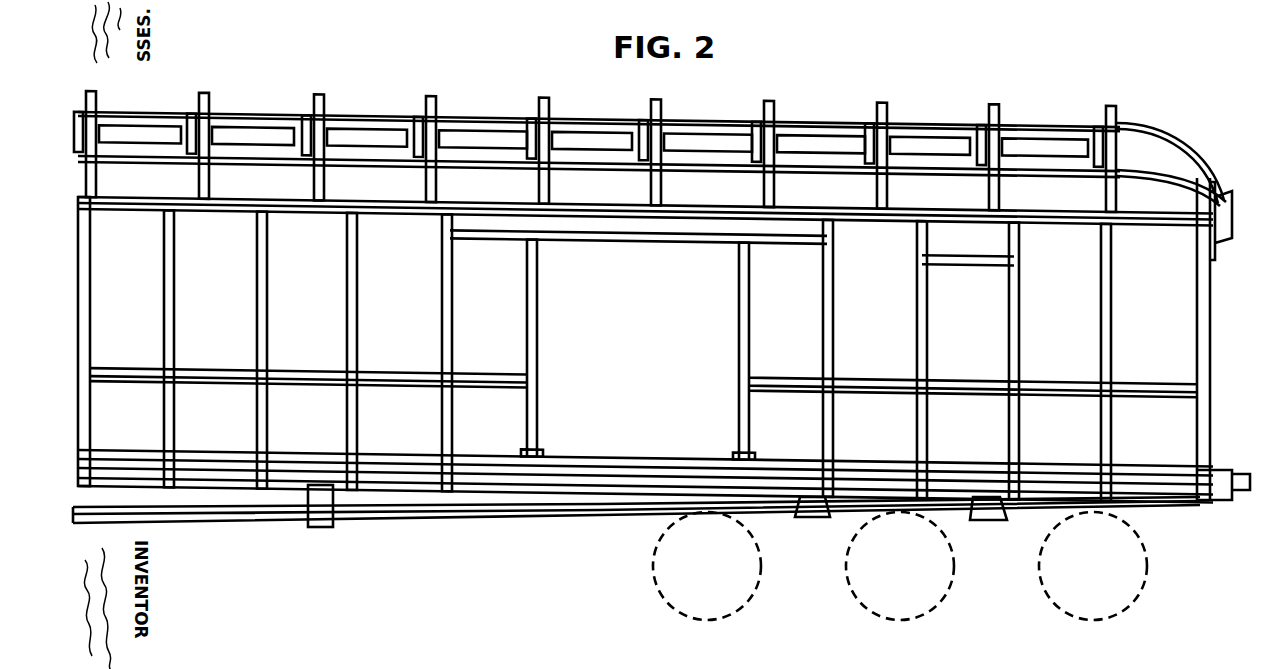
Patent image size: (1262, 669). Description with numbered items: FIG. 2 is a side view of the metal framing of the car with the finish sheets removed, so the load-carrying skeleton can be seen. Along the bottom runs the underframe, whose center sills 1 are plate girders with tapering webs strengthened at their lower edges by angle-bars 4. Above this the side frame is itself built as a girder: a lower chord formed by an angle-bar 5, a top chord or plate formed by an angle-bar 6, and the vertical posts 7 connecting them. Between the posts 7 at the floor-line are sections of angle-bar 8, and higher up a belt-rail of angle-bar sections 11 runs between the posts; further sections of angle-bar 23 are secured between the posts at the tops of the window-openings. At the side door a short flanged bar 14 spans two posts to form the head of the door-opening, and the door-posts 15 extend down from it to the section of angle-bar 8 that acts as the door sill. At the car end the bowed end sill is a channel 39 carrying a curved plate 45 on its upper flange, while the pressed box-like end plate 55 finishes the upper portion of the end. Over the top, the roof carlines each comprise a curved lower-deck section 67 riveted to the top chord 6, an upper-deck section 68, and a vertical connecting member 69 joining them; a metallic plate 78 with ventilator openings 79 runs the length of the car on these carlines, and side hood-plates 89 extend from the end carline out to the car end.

The center sill 1 is at (262, 498).
The angle-bar 4 is at (403, 523).
The angle-bar (lower chord) 5 is at (396, 487).
The angle-bar (top chord) 6 is at (704, 210).
The posts 7 is at (1112, 350).
The angle-bar 8 is at (957, 465).
The angle-bar (belt-rail) 11 is at (1070, 392).
The flanged bar 14 is at (642, 242).
The door-posts 15 is at (738, 328).
The angle-bar 23 is at (982, 259).
The channel (end sill) 39 is at (1222, 500).
The plate 45 is at (1215, 470).
The end plate 55 is at (1224, 243).
The lower-deck section 67 is at (995, 194).
The upper-deck section 68 is at (990, 119).
The vertical connecting member 69 is at (988, 147).
The metallic plate 78 is at (705, 128).
The openings 79 is at (812, 135).
The side hood-plates 89 is at (1140, 165).